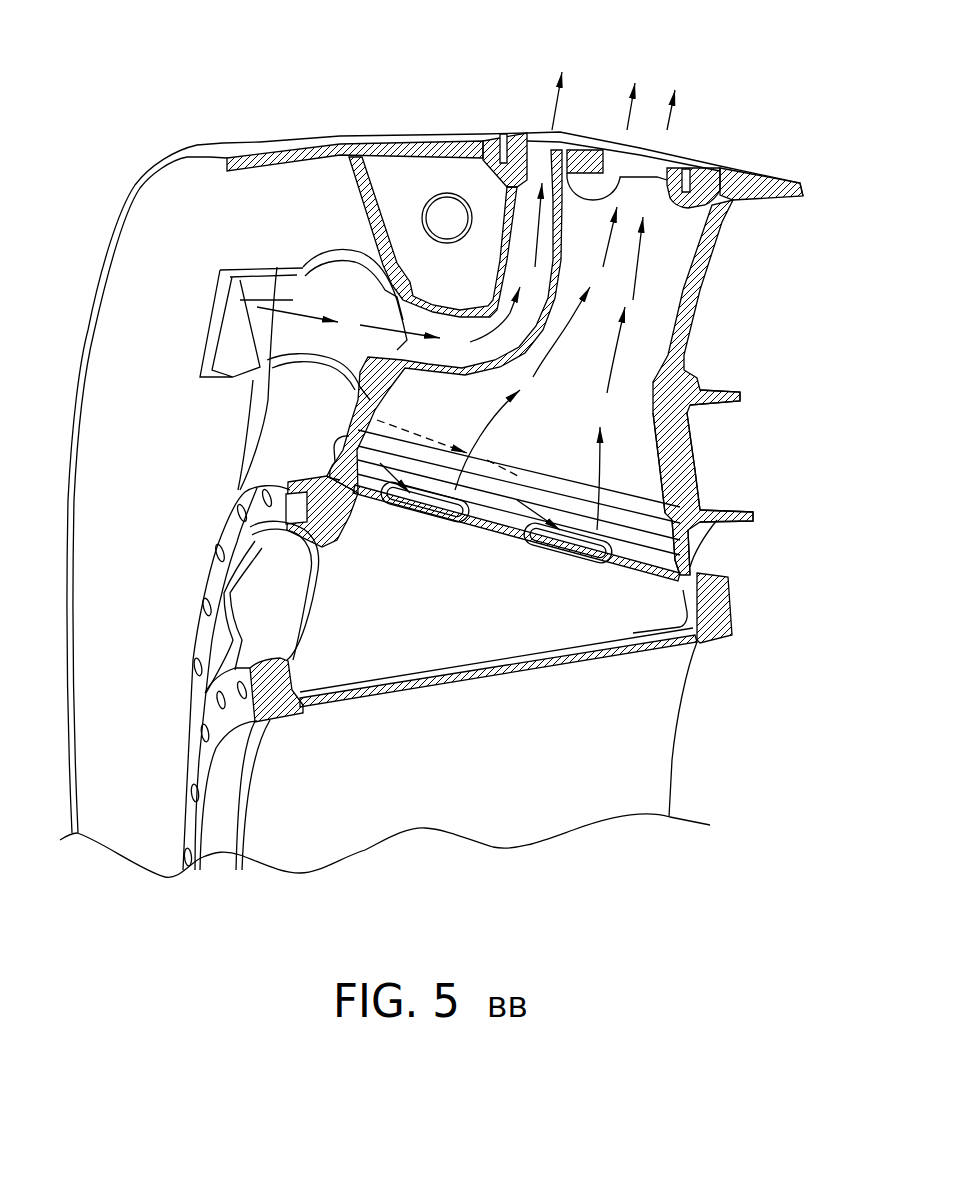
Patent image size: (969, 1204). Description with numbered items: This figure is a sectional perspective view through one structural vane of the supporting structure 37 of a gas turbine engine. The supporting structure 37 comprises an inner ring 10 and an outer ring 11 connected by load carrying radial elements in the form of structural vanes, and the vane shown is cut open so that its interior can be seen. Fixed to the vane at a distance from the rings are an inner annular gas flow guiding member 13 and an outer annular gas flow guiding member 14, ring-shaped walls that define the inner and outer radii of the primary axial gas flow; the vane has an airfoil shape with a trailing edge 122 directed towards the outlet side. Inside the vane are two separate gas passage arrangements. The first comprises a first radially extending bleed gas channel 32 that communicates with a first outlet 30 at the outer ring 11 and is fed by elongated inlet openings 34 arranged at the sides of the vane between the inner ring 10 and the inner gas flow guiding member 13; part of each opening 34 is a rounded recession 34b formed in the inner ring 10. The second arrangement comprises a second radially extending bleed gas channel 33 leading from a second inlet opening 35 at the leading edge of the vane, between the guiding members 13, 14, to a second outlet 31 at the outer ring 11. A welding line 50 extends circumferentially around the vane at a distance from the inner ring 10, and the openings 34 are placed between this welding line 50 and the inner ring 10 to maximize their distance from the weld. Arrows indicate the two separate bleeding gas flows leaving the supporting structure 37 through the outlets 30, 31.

The inner ring 10 is at (707, 573).
The outer ring 11 is at (760, 182).
The inner annular gas flow guiding member 13 is at (737, 517).
The outer annular gas flow guiding member 14 is at (737, 400).
The trailing edge 122 is at (687, 460).
The first outlet 30 is at (665, 148).
The second outlet 31 is at (548, 152).
The first radially extending bleed gas channel 32 is at (663, 273).
The second radially extending bleed gas channel 33 is at (505, 230).
The elongated inlet opening 34 is at (475, 508).
The rounded recession 34b is at (405, 523).
The second inlet opening 35 is at (390, 315).
The supporting structure 37 is at (147, 945).
The welding line 50 is at (685, 535).